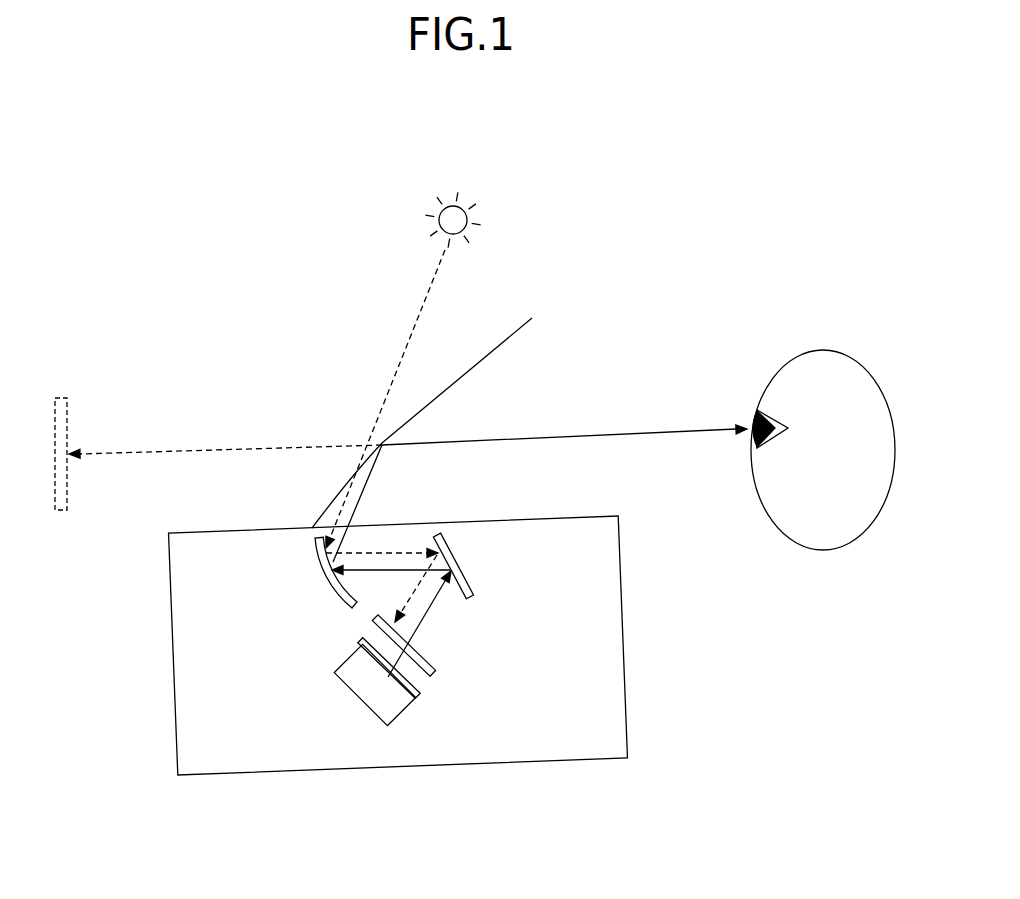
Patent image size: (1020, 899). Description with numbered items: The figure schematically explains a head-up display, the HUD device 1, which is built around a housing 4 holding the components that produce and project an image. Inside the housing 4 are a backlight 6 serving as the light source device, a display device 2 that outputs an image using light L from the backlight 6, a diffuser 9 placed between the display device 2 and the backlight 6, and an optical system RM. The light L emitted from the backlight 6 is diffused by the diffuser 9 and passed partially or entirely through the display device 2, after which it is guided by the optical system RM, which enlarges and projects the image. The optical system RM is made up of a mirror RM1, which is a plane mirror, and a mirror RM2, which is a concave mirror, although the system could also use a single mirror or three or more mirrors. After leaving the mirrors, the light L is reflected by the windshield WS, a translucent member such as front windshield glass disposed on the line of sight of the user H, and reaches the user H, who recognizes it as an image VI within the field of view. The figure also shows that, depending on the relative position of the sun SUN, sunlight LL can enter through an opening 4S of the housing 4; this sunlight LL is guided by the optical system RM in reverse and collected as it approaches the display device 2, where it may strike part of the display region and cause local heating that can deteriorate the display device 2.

The HUD device 1 is at (428, 645).
The display device 2 is at (433, 676).
The housing 4 is at (627, 718).
The opening 4S is at (379, 506).
The backlight 6 is at (343, 672).
The diffuser 9 is at (417, 692).
The optical system RM is at (392, 589).
The mirror RM1 is at (478, 566).
The mirror RM2 is at (320, 584).
The light L is at (595, 436).
The sunlight LL is at (416, 318).
The windshield WS is at (462, 372).
The image VI is at (60, 398).
The user H is at (823, 580).
The sun SUN is at (517, 157).